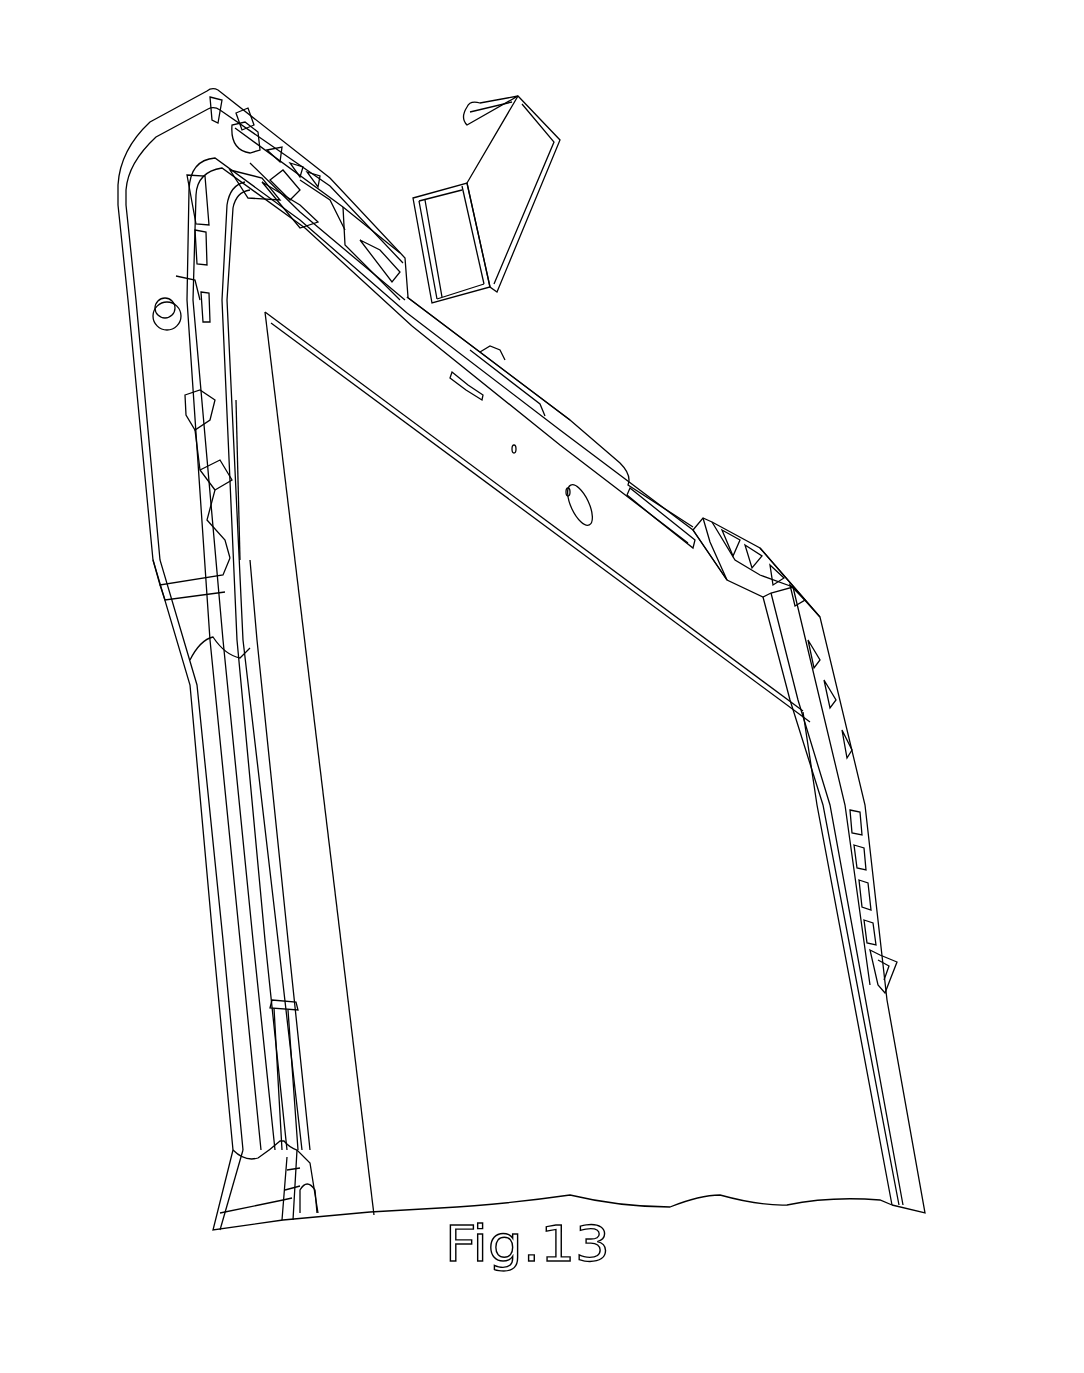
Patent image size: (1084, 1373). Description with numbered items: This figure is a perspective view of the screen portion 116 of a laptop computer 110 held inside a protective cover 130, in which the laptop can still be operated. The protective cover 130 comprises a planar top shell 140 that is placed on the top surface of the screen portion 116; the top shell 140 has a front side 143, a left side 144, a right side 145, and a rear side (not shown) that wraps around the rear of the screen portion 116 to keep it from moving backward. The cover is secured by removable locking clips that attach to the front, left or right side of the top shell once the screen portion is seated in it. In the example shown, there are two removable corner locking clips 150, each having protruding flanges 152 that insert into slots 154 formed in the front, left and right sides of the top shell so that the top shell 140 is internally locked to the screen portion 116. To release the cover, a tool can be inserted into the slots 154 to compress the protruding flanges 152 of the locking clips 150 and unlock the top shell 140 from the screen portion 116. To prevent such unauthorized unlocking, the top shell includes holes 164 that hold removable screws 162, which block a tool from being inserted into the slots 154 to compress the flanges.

The laptop computer 110 is at (712, 398).
The screen portion 116 is at (632, 550).
The protective cover 130 is at (208, 60).
The top shell 140 is at (86, 176).
The front side 143 is at (537, 388).
The left side 144 is at (165, 520).
The right side 145 is at (872, 890).
The removable corner locking clip 150 is at (530, 140).
The protruding flange 152 is at (470, 105).
The slot 154 is at (285, 205).
The screw 162 is at (165, 322).
The hole 164 is at (152, 308).